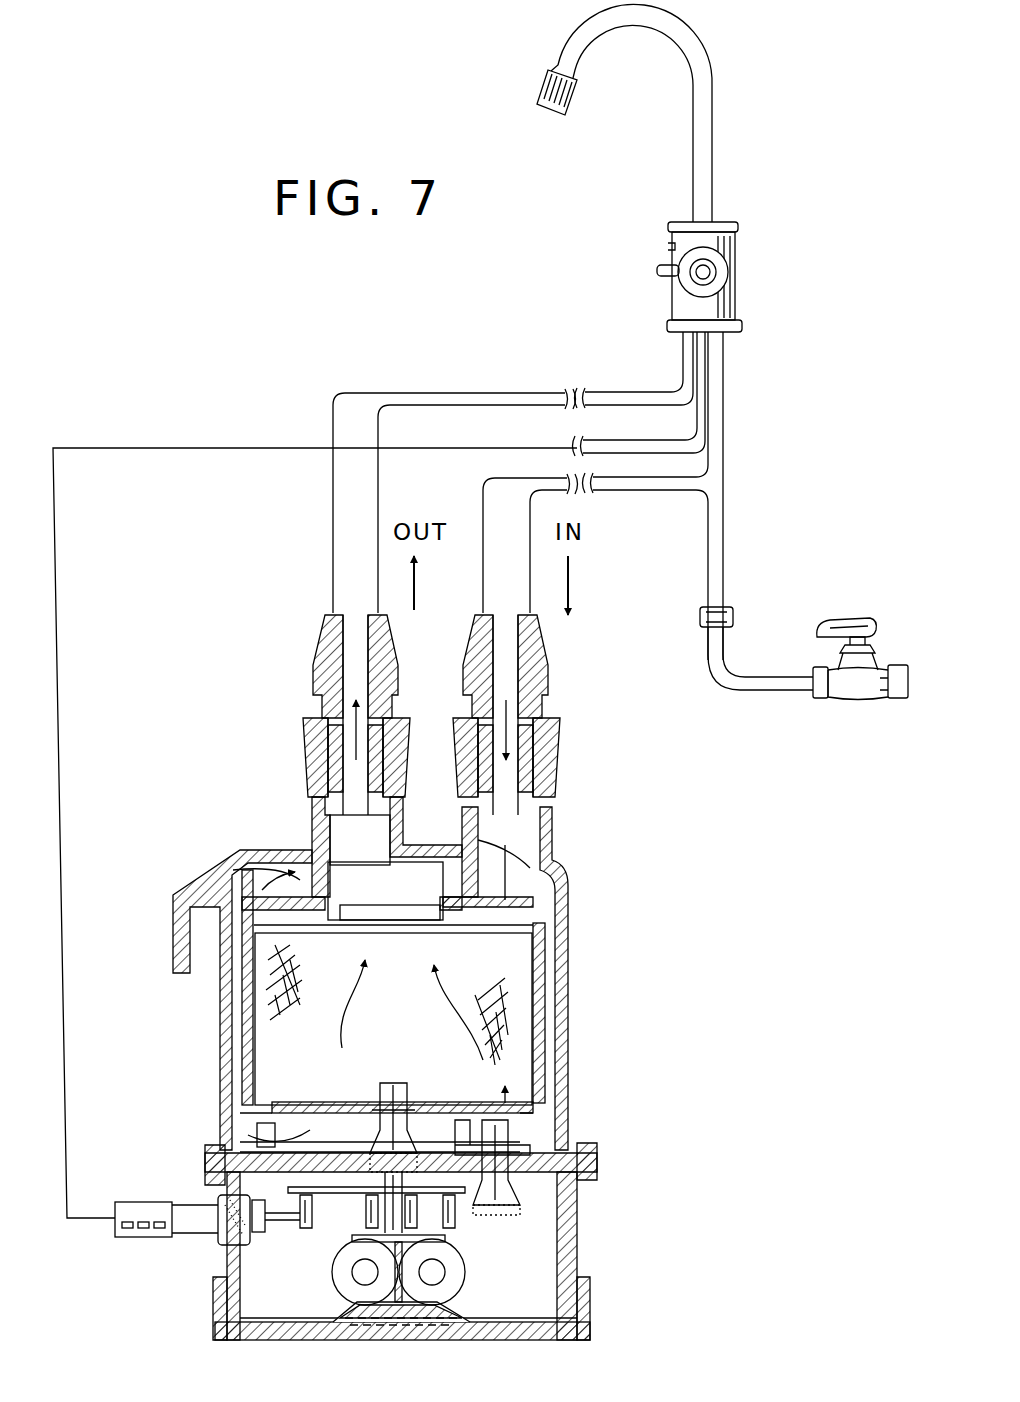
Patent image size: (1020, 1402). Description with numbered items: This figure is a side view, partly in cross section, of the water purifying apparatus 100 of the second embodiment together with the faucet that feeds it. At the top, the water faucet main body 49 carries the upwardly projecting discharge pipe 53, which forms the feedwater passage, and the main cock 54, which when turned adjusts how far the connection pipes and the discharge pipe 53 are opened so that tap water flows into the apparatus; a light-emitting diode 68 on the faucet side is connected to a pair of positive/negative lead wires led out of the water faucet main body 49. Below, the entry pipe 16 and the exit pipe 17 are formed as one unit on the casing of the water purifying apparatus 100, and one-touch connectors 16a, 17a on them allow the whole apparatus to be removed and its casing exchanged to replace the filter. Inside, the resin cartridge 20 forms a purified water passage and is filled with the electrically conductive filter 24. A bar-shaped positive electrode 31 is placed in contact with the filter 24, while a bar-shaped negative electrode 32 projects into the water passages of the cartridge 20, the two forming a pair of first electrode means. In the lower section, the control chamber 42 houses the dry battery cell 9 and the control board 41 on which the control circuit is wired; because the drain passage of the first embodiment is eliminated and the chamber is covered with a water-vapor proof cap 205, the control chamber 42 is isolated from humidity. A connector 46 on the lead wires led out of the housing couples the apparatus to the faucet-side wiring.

The discharge pipe 53 is at (715, 125).
The main cock 54 is at (722, 272).
The light-emitting diode 68 is at (668, 247).
The water faucet main body 49 is at (735, 302).
The water purifying apparatus 100 is at (266, 690).
The exit pipe 17 is at (316, 656).
The one-touch connector 17a is at (306, 732).
The entry pipe 16 is at (552, 650).
The one-touch connector 16a is at (562, 760).
The cartridge 20 is at (286, 860).
The electrically conductive filter 24 is at (505, 968).
The positive electrode 31 is at (397, 1083).
The negative electrode 32 is at (555, 1135).
The control board 41 is at (232, 1140).
The control chamber 42 is at (565, 1185).
The connector 46 is at (125, 1238).
The dry battery cell 9 is at (455, 1265).
The water-vapor proof cap 205 is at (590, 1290).